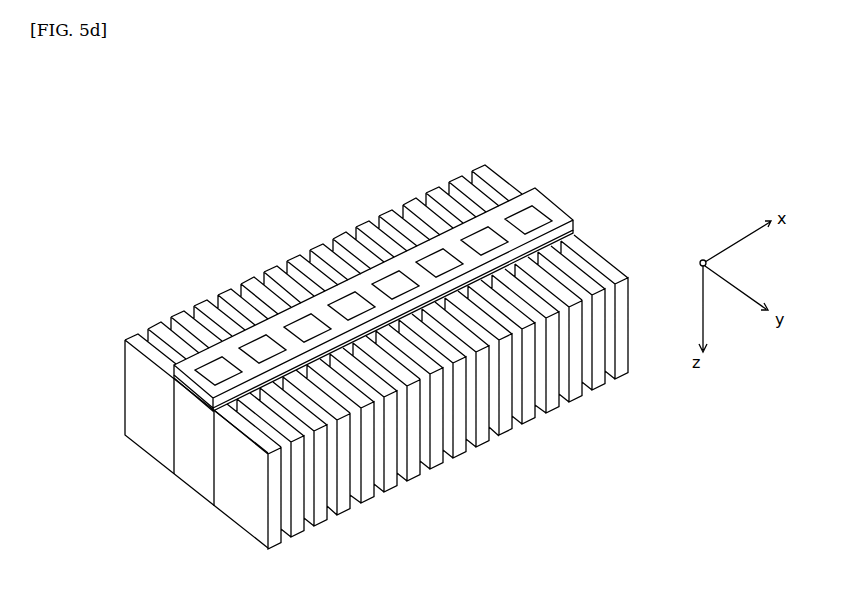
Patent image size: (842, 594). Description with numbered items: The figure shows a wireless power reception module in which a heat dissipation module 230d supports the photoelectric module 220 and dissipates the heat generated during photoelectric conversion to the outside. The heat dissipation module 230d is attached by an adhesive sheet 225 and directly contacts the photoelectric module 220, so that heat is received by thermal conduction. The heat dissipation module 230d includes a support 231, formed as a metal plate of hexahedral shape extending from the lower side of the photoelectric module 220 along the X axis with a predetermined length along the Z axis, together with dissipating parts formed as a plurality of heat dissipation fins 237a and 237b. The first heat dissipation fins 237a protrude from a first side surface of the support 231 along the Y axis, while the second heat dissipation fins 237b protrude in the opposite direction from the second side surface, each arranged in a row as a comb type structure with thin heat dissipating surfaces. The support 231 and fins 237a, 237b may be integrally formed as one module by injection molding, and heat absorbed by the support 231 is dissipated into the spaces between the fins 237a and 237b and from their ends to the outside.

The photoelectric module 220 is at (173, 380).
The adhesive sheet 225 is at (173, 400).
The support 231 is at (192, 437).
The heat dissipation module 230d is at (196, 481).
The first heat dissipation fin 237a is at (277, 461).
The second heat dissipation fin 237b is at (477, 157).